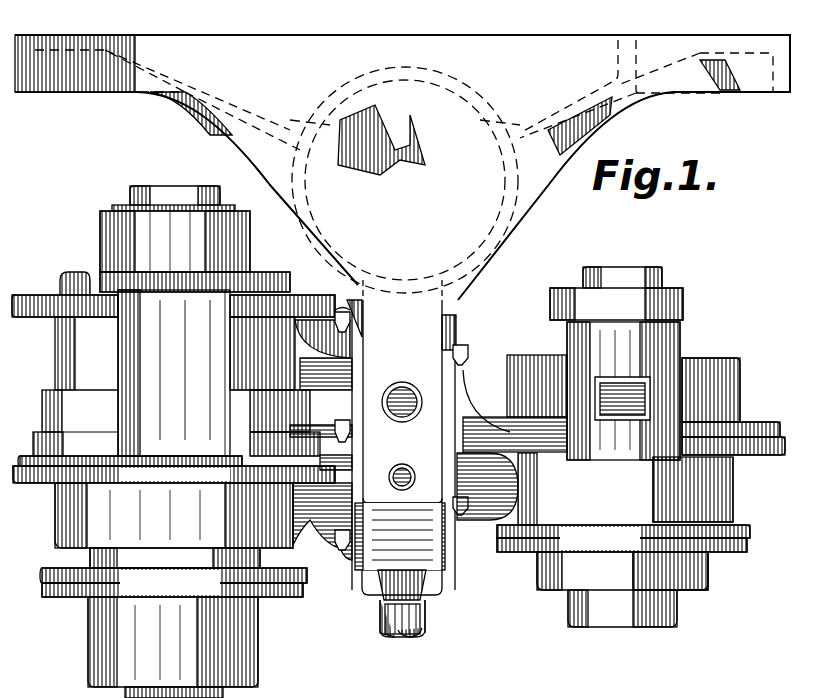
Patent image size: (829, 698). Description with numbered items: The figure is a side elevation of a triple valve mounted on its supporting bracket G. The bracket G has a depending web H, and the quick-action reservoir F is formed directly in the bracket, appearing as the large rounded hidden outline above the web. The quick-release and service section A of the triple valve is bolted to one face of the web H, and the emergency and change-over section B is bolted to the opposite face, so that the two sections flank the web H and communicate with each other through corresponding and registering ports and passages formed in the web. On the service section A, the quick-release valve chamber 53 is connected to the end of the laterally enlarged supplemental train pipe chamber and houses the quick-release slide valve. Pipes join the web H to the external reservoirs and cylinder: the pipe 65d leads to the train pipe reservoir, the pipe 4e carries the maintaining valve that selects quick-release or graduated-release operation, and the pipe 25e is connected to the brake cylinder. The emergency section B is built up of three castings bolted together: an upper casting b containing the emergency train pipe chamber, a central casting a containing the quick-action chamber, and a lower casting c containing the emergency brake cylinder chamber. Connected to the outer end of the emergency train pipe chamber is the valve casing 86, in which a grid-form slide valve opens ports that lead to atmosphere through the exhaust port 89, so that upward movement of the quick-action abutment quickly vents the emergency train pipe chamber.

The supporting bracket G is at (250, 42).
The quick-action reservoir F is at (405, 180).
The depending web H is at (401, 458).
The quick-release and service section A is at (155, 184).
The emergency and change-over section B is at (618, 266).
The quick-release valve chamber 53 is at (130, 318).
The pipe 65d is at (405, 395).
The pipe 4e is at (402, 478).
The pipe 25e is at (412, 635).
The valve casing 86 is at (577, 340).
The exhaust port 89 is at (650, 402).
The upper casting b is at (727, 360).
The central casting a is at (725, 478).
The lower casting c is at (710, 582).